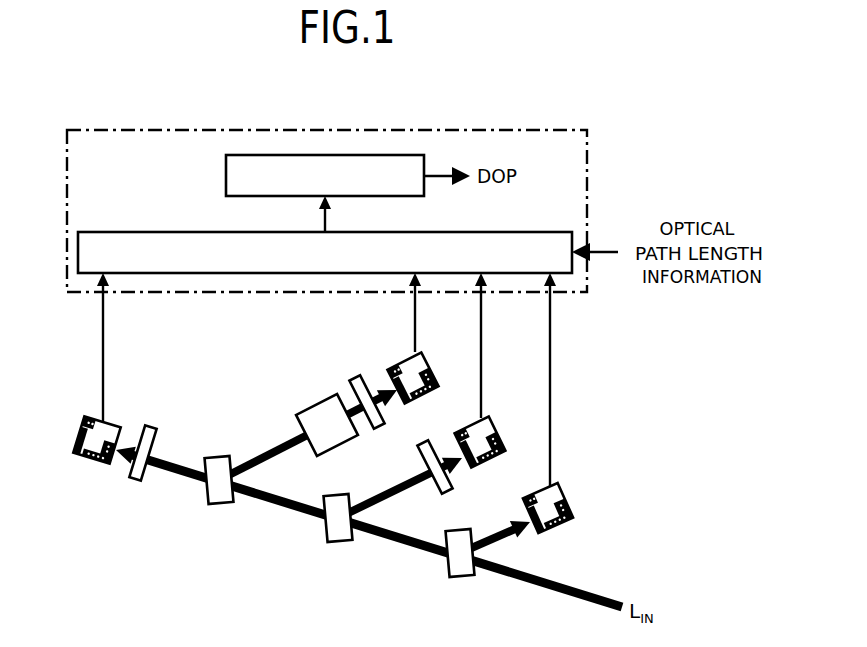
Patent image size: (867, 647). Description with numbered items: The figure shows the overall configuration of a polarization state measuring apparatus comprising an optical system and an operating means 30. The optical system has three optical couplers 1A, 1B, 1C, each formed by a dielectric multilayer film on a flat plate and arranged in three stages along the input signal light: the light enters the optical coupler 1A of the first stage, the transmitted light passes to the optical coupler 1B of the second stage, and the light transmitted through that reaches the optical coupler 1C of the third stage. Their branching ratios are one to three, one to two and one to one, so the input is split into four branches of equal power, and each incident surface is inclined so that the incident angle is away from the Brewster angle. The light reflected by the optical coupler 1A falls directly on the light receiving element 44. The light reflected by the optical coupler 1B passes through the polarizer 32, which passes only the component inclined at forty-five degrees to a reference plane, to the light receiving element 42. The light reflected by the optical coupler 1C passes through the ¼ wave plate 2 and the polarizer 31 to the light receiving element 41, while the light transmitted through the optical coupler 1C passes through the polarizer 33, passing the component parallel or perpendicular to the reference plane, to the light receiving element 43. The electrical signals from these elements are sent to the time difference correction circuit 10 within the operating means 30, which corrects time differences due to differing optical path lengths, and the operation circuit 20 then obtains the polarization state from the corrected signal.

The operating means 30 is at (327, 195).
The operation circuit 20 is at (226, 175).
The time difference correction circuit 10 is at (127, 232).
The optical coupler 1A is at (460, 578).
The optical coupler 1B is at (340, 543).
The optical coupler 1C is at (220, 505).
The ¼ wave plate 2 is at (312, 400).
The polarizer 31 is at (357, 374).
The polarizer 32 is at (438, 490).
The polarizer 33 is at (148, 426).
The light receiving element 41 is at (405, 352).
The light receiving element 42 is at (497, 430).
The light receiving element 43 is at (80, 432).
The light receiving element 44 is at (564, 492).